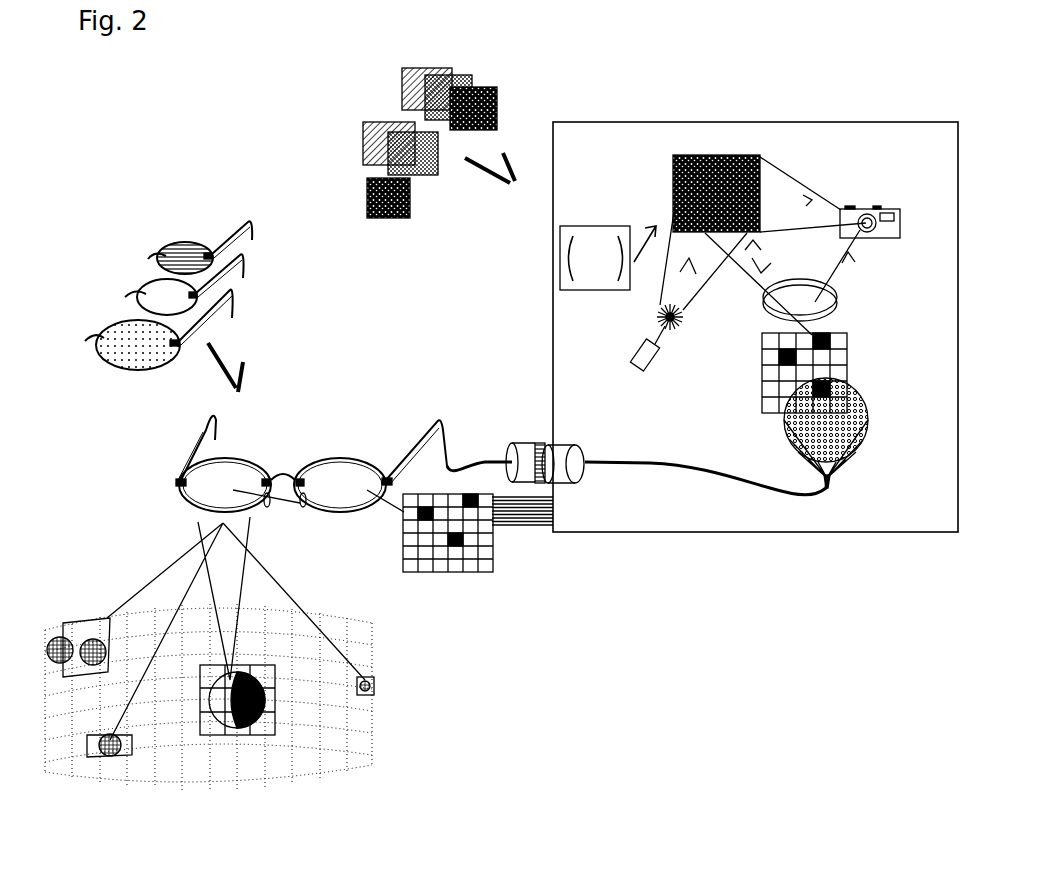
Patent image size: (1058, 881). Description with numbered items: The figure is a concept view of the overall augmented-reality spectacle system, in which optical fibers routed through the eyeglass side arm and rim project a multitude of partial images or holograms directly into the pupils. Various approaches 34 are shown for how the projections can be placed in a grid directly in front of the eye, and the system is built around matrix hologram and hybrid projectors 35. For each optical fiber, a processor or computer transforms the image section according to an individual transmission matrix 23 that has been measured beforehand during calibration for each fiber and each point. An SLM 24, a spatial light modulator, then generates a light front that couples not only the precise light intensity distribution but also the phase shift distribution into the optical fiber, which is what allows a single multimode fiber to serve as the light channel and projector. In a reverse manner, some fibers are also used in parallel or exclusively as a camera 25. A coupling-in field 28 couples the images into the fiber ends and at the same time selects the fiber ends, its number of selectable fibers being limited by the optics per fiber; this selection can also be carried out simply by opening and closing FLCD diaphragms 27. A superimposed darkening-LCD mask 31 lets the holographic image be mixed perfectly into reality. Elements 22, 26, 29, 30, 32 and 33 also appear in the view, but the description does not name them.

The light source 22 is at (636, 350).
The transmission matrix 23 is at (603, 279).
The SLM (Spatial Light Modulator) 24 is at (722, 157).
The camera 25 is at (897, 206).
The lens 26 is at (765, 302).
The FLCD diaphragms 27 is at (772, 387).
The coupling-in field 28 is at (805, 422).
The connector 29 is at (560, 465).
The cable 30 is at (487, 465).
The darkening-LCD mask 31 is at (478, 550).
The spectacles 32 is at (215, 500).
The visual scene 33 is at (283, 703).
The approaches 34 is at (208, 237).
The matrix hologram and hybrid projectors 35 is at (453, 147).